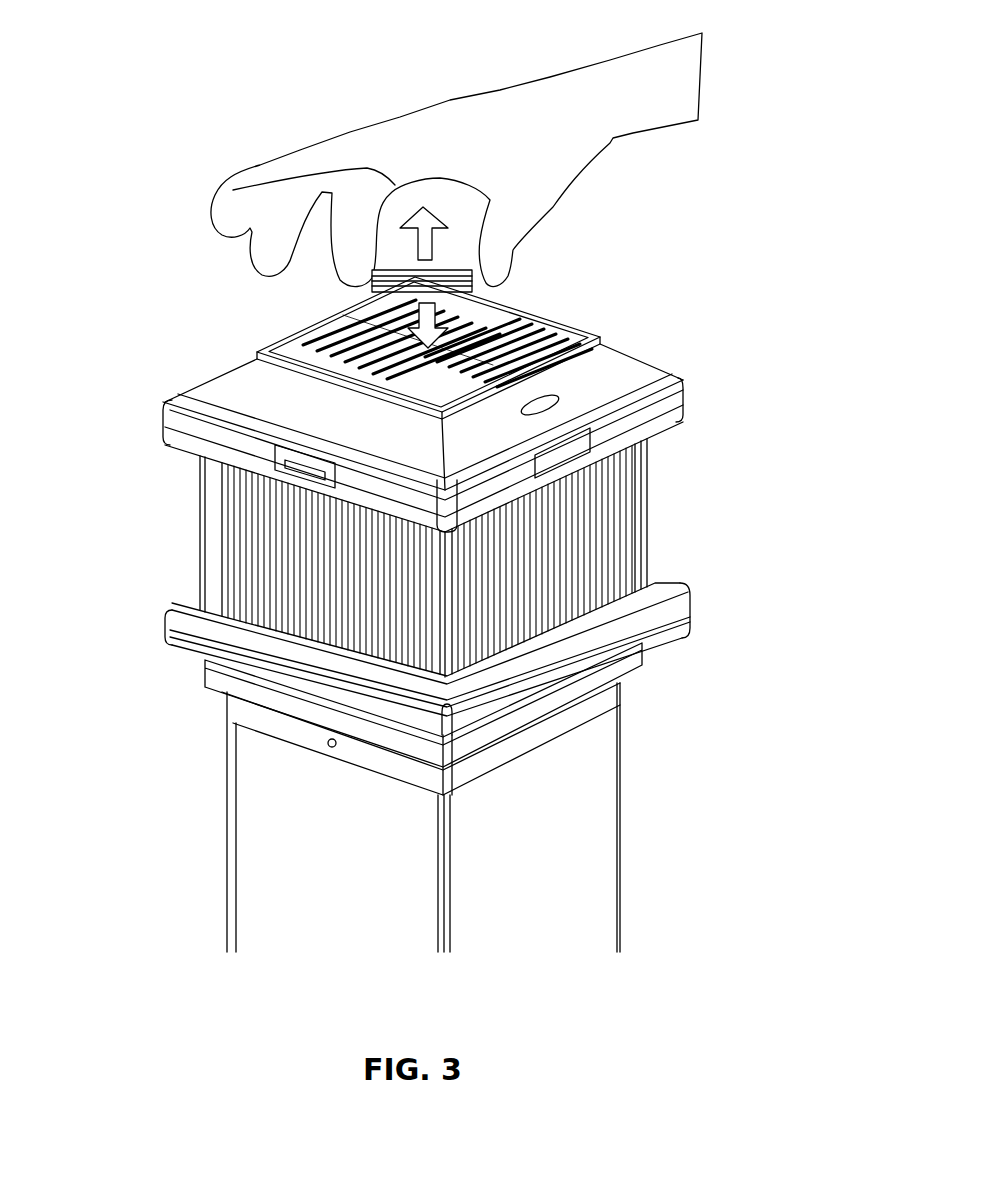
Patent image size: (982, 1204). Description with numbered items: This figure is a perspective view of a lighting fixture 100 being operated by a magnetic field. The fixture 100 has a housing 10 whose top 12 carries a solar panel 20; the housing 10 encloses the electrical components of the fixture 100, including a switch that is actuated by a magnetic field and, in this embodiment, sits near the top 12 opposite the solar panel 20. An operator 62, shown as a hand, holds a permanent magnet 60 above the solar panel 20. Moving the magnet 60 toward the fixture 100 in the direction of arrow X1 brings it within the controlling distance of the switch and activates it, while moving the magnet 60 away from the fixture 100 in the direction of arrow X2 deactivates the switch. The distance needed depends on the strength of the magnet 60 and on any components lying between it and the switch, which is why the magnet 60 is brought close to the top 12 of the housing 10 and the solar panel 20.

The housing 10 is at (687, 417).
The top 12 is at (627, 357).
The solar panel 20 is at (415, 337).
The magnet 60 is at (477, 283).
The operator 62 is at (450, 100).
The lighting fixture 100 is at (160, 350).
The arrow X1 is at (480, 303).
The arrow X2 is at (433, 240).